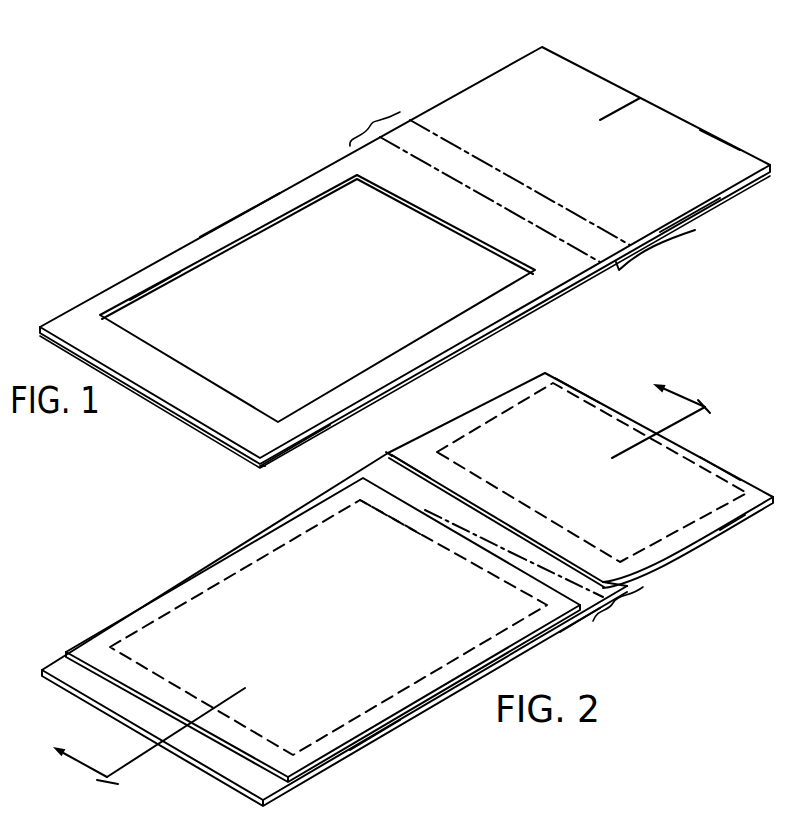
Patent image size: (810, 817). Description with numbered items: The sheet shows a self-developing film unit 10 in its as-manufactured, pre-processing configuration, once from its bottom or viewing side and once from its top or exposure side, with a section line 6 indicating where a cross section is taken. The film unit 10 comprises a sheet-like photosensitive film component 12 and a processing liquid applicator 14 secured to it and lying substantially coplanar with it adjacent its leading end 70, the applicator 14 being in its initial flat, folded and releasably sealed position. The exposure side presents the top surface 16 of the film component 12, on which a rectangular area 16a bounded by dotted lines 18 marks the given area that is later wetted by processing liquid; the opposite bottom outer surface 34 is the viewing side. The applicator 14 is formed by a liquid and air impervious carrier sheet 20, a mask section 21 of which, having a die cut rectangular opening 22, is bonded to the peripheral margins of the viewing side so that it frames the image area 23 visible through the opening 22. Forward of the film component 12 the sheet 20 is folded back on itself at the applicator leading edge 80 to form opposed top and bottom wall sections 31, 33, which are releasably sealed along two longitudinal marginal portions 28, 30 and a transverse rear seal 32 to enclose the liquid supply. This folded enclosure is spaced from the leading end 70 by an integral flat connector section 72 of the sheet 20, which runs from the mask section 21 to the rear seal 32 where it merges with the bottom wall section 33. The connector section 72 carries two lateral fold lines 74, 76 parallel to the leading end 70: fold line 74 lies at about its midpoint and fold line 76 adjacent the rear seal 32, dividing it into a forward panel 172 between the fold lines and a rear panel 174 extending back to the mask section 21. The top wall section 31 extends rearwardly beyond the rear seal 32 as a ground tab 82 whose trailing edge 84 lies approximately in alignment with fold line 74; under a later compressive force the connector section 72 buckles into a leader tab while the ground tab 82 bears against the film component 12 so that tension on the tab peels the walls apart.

In FIG. 1, the film unit 10 is at (442, 76).
In FIG. 1, the photosensitive film component 12 is at (317, 437).
In FIG. 2, the photosensitive film component 12 is at (107, 620).
In FIG. 1, the processing liquid applicator 14 is at (736, 204).
In FIG. 2, the top surface 16 is at (233, 563).
In FIG. 2, the rectangular area 16a is at (333, 634).
In FIG. 2, the dotted lines 18 is at (302, 527).
In FIG. 2, the carrier sheet 20 is at (579, 633).
In FIG. 1, the mask section 21 is at (237, 221).
In FIG. 2, the mask section 21 is at (373, 735).
In FIG. 1, the rectangular opening 22 is at (305, 226).
In FIG. 1, the image area 23 is at (327, 310).
In FIG. 2, the longitudinal marginal portion 28 is at (470, 422).
In FIG. 2, the longitudinal marginal portion 30 is at (738, 526).
In FIG. 1, the top wall section 31 is at (692, 215).
In FIG. 2, the top wall section 31 is at (575, 405).
In FIG. 2, the rear seal 32 is at (525, 513).
In FIG. 1, the bottom wall section 33 is at (633, 110).
In FIG. 1, the bottom outer surface 34 is at (157, 300).
In FIG. 2, the leading end 70 is at (615, 557).
In FIG. 1, the connector section 72 is at (375, 121).
In FIG. 2, the connector section 72 is at (618, 614).
In FIG. 1, the fold line 74 is at (418, 158).
In FIG. 2, the fold line 74 is at (530, 557).
In FIG. 1, the fold line 76 is at (553, 193).
In FIG. 1, the applicator leading edge 80 is at (735, 145).
In FIG. 2, the applicator leading edge 80 is at (720, 470).
In FIG. 1, the ground tab 82 is at (628, 255).
In FIG. 2, the ground tab 82 is at (408, 452).
In FIG. 2, the trailing edge 84 is at (388, 453).
In FIG. 2, the forward panel 172 is at (380, 508).
In FIG. 2, the rear panel 174 is at (442, 517).
In FIG. 2, the section line 6- 6 is at (371, 576).